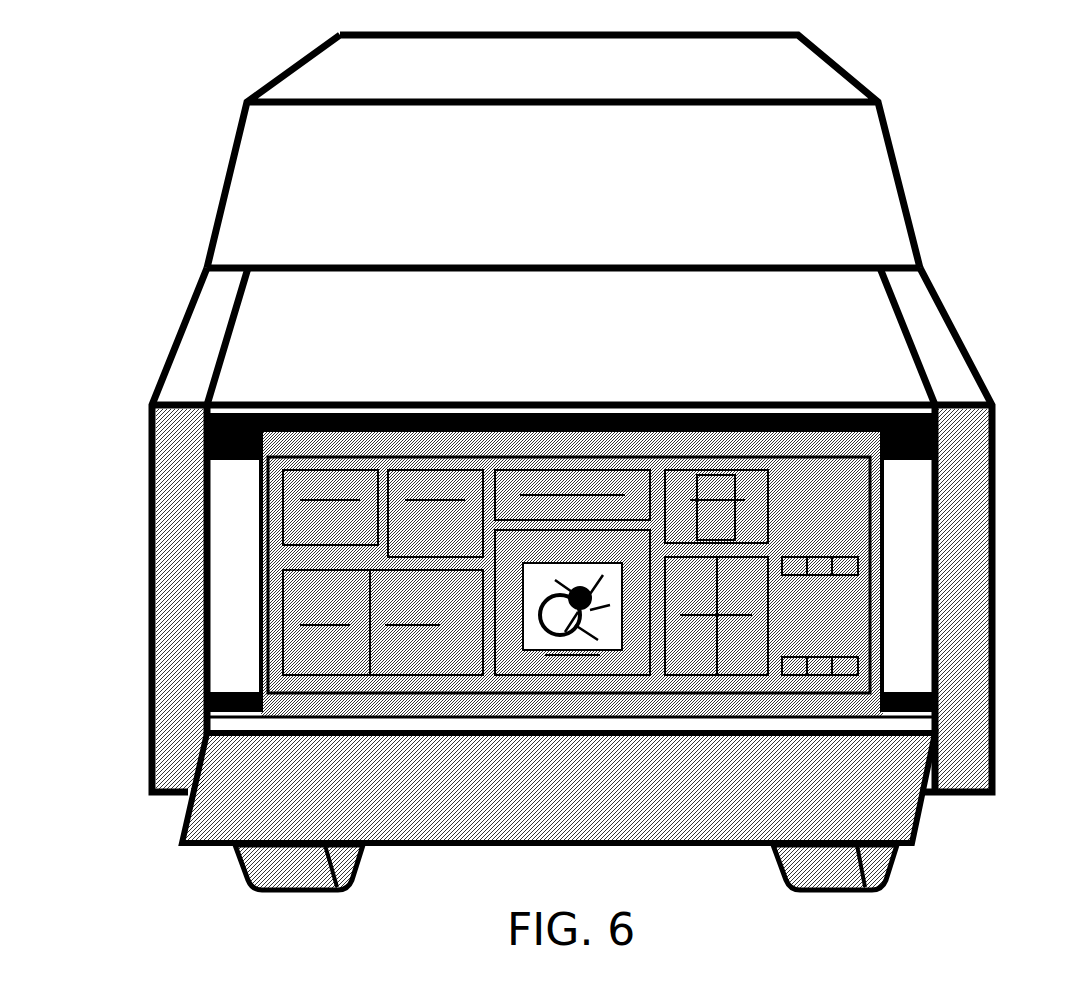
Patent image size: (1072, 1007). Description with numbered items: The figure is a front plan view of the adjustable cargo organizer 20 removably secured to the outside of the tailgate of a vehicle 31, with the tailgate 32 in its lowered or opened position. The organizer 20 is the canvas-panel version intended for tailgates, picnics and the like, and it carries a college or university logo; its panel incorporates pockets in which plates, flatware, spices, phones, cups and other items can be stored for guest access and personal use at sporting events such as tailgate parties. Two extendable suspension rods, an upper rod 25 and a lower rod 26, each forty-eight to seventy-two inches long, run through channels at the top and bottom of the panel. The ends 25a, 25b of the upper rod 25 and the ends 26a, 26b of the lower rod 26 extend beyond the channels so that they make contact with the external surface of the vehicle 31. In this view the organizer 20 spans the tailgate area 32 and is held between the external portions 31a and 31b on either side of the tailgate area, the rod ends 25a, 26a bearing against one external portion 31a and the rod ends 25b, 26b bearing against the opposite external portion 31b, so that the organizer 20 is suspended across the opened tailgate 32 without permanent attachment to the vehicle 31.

The adjustable cargo organizer 20 is at (600, 412).
The suspension rod 25 is at (240, 462).
The end of suspension rod 25a is at (923, 462).
The end of suspension rod 25b is at (217, 462).
The suspension rod 26 is at (253, 693).
The end of suspension rod 26a is at (925, 688).
The end of suspension rod 26b is at (218, 688).
The vehicle 31 is at (958, 325).
The external portion of tailgate area 31a is at (930, 572).
The external portion of tailgate area 31b is at (210, 596).
The tailgate area 32 is at (505, 847).